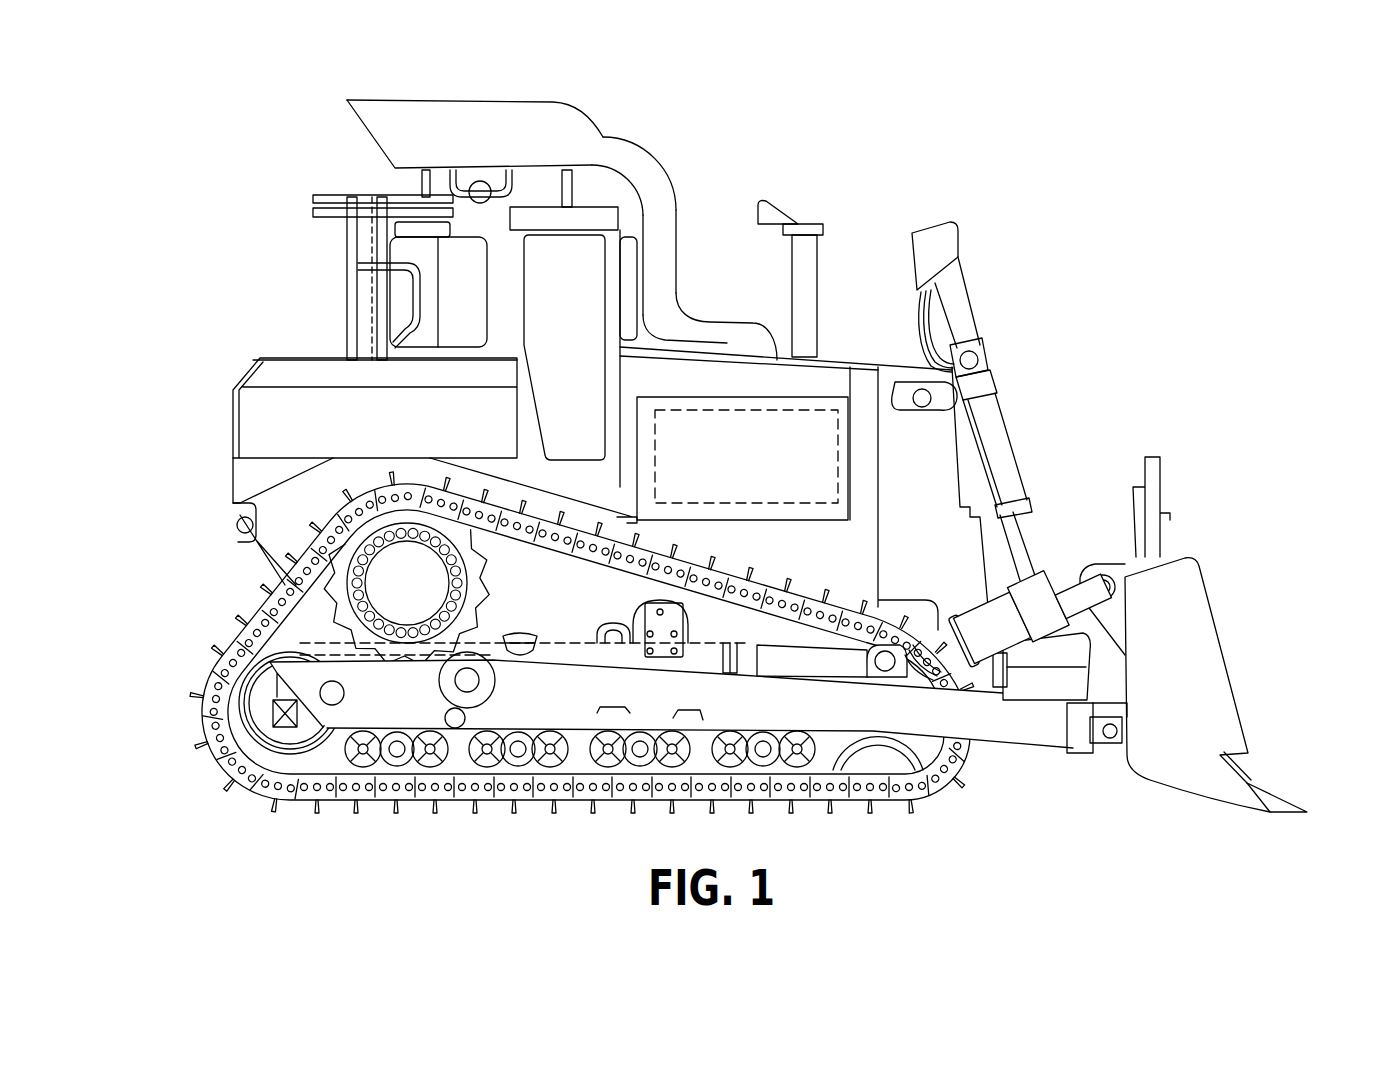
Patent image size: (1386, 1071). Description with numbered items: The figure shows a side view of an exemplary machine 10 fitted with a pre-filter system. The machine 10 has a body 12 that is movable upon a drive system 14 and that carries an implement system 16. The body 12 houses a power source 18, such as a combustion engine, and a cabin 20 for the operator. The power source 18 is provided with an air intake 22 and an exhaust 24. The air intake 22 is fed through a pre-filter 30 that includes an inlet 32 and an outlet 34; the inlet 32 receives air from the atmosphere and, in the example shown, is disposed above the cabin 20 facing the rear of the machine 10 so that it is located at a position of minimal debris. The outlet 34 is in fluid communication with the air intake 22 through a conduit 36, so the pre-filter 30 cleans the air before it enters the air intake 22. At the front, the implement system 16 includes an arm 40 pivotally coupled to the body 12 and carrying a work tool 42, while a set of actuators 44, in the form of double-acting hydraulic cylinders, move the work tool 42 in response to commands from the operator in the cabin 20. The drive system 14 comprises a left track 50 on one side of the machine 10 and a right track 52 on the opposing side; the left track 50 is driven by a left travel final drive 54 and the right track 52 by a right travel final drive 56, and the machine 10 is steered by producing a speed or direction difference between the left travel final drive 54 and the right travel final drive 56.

The machine 10 is at (1162, 184).
The body 12 is at (809, 142).
The drive system 14 is at (550, 672).
The implement system 16 is at (788, 521).
The power source 18 is at (821, 405).
The cabin 20 is at (306, 268).
The air intake 22 is at (720, 294).
The exhaust 24 is at (816, 213).
The pre-filter 30 is at (541, 100).
The inlet 32 is at (342, 130).
The outlet 34 is at (611, 125).
The conduit 36 is at (664, 183).
The arm 40 is at (986, 740).
The work tool 42 is at (1219, 621).
The set of actuators 44 is at (1054, 585).
The left track 50 is at (188, 740).
The right track 52 is at (256, 786).
The left travel final drive 54 is at (207, 562).
The right travel final drive 56 is at (239, 603).